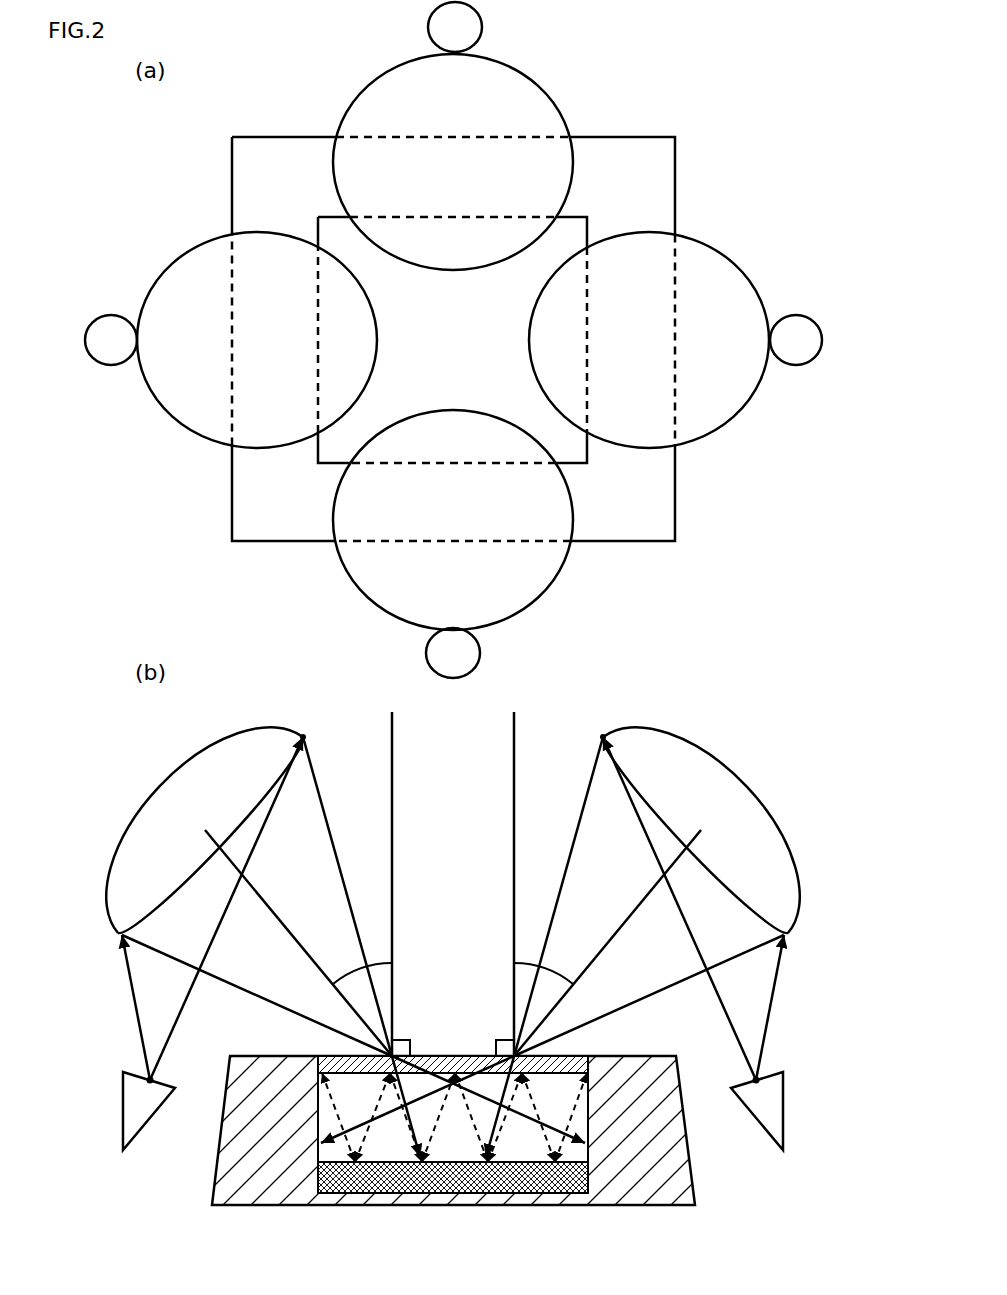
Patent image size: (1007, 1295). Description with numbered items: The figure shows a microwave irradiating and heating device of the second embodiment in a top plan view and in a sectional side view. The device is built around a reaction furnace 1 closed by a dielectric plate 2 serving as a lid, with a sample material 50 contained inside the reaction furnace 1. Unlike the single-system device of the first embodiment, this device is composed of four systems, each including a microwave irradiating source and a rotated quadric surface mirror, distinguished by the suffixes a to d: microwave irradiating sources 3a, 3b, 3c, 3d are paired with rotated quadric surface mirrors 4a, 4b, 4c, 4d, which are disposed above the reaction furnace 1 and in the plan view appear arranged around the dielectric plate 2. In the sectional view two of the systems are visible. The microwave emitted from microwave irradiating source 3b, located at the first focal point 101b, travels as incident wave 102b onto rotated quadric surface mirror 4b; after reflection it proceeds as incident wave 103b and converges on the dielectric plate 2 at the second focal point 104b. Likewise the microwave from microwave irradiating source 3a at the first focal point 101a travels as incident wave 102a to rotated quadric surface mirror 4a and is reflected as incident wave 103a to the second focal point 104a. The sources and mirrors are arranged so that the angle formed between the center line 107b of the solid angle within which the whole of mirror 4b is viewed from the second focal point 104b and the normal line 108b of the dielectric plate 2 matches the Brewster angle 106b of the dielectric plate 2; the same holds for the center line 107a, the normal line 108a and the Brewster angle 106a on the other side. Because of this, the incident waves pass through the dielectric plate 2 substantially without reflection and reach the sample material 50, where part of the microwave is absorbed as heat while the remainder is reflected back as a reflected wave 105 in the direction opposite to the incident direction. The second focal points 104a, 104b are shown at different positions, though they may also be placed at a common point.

The reaction furnace 1 is at (278, 152).
The dielectric plate 2 is at (330, 452).
The microwave irradiating source 3a is at (796, 315).
The microwave irradiating source 3b is at (111, 365).
The microwave irradiating source 3c is at (486, 26).
The microwave irradiating source 3d is at (480, 652).
The rotated quadric surface mirror 4a is at (741, 409).
The rotated quadric surface mirror 4b is at (165, 409).
The rotated quadric surface mirror 4c is at (561, 115).
The rotated quadric surface mirror 4d is at (542, 594).
The sample material 50 is at (408, 1196).
The first focal point 101a is at (758, 1079).
The first focal point 101b is at (148, 1079).
The incident wave 102a is at (774, 996).
The incident wave 102b is at (132, 996).
The incident wave 103a is at (584, 804).
The incident wave 103b is at (322, 804).
The second focal point 104a is at (502, 1040).
The second focal point 104b is at (404, 1040).
The reflected wave 105 is at (475, 1127).
The Brewster angle 106a is at (528, 963).
The Brewster angle 106b is at (378, 963).
The center line 107a is at (643, 900).
The center line 107b is at (280, 892).
The normal line 108a is at (515, 730).
The normal line 108b is at (391, 730).